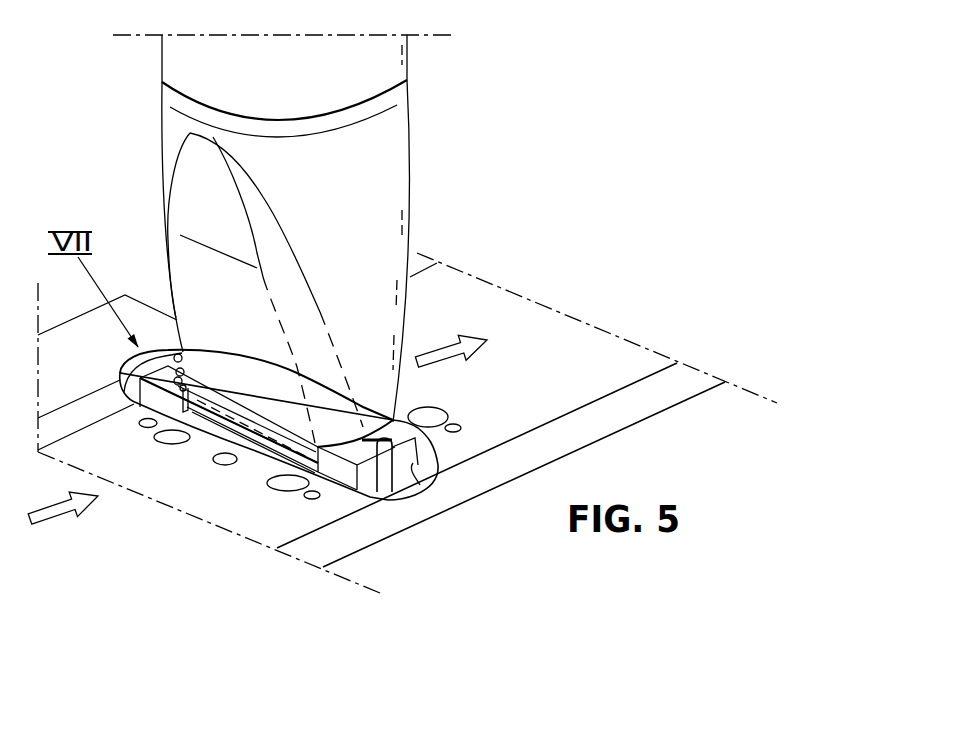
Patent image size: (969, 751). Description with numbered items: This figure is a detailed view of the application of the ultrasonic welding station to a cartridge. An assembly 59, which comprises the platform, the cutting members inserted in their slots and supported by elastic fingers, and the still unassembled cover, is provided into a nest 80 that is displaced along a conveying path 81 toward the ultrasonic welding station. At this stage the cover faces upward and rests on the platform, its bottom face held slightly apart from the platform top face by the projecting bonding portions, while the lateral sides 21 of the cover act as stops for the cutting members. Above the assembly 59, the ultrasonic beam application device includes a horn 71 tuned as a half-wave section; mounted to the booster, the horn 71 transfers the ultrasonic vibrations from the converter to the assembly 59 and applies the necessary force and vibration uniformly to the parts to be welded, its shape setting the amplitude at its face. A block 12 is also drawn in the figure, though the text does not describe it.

The horn 71 is at (192, 205).
The nest 80 is at (368, 475).
The block 12 is at (220, 423).
The assembly 59 is at (253, 447).
The lateral sides 21 is at (397, 492).
The conveying path 81 is at (582, 367).